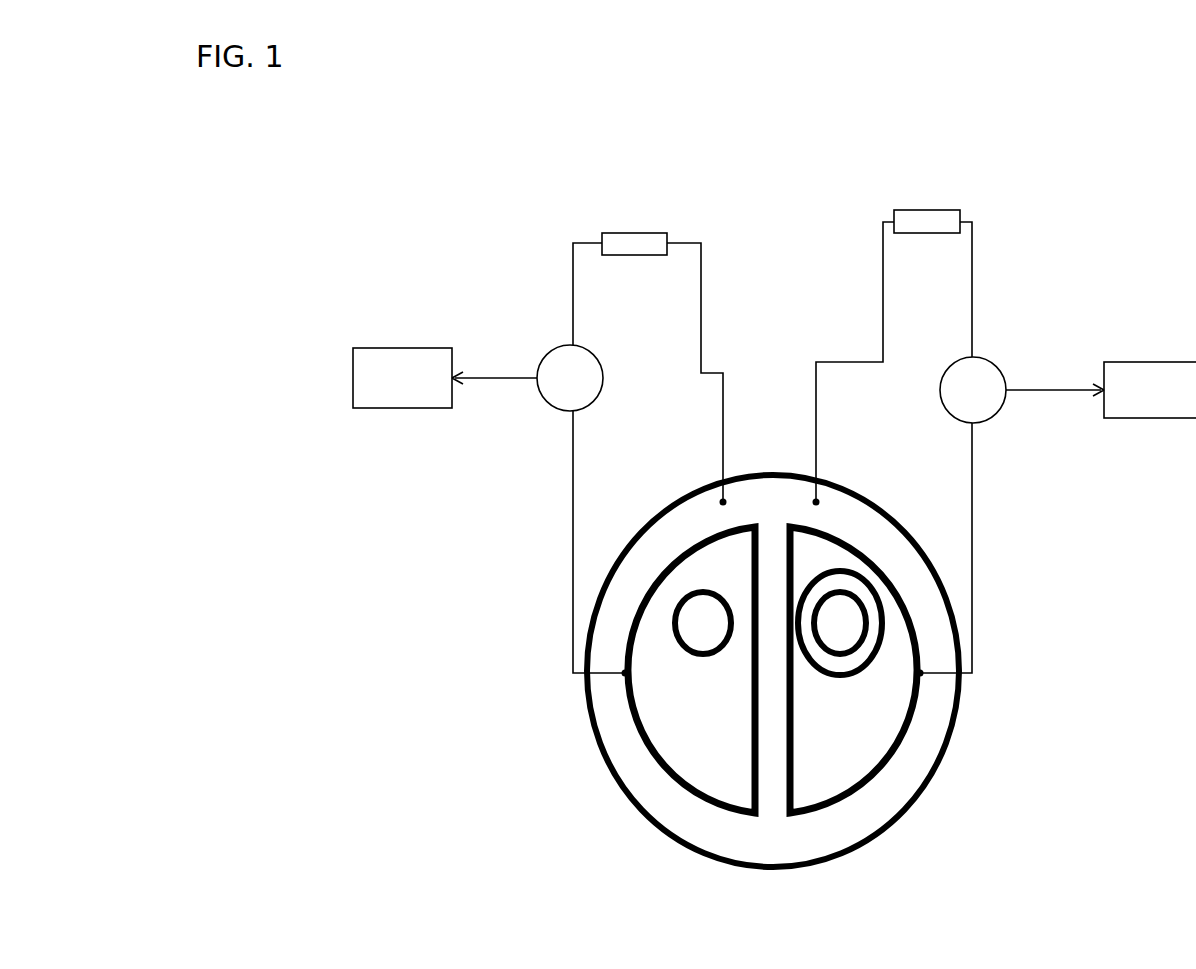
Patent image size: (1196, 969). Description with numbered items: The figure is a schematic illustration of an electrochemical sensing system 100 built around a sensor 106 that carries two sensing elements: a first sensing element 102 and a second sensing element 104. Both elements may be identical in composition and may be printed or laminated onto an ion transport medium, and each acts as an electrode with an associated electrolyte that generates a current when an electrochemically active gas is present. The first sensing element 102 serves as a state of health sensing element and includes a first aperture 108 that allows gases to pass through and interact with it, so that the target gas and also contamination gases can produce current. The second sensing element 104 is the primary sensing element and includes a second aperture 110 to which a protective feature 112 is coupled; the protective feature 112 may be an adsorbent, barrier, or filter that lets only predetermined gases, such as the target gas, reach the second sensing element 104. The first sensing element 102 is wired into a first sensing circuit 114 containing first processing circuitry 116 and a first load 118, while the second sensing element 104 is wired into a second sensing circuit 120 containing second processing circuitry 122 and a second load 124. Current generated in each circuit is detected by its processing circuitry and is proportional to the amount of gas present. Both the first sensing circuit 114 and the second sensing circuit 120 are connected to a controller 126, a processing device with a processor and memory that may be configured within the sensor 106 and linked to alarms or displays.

The sensing system 100 is at (417, 282).
The first sensing element 102 is at (688, 762).
The second sensing element 104 is at (832, 777).
The sensor 106 is at (945, 757).
The first aperture 108 is at (706, 605).
The second aperture 110 is at (840, 615).
The protective feature 112 is at (880, 628).
The first sensing circuit 114 is at (598, 407).
The first processing circuitry 116 is at (550, 355).
The first load 118 is at (639, 233).
The second sensing circuit 120 is at (946, 397).
The second processing circuitry 122 is at (1000, 367).
The second load 124 is at (928, 208).
The controller 126 is at (774, 383).